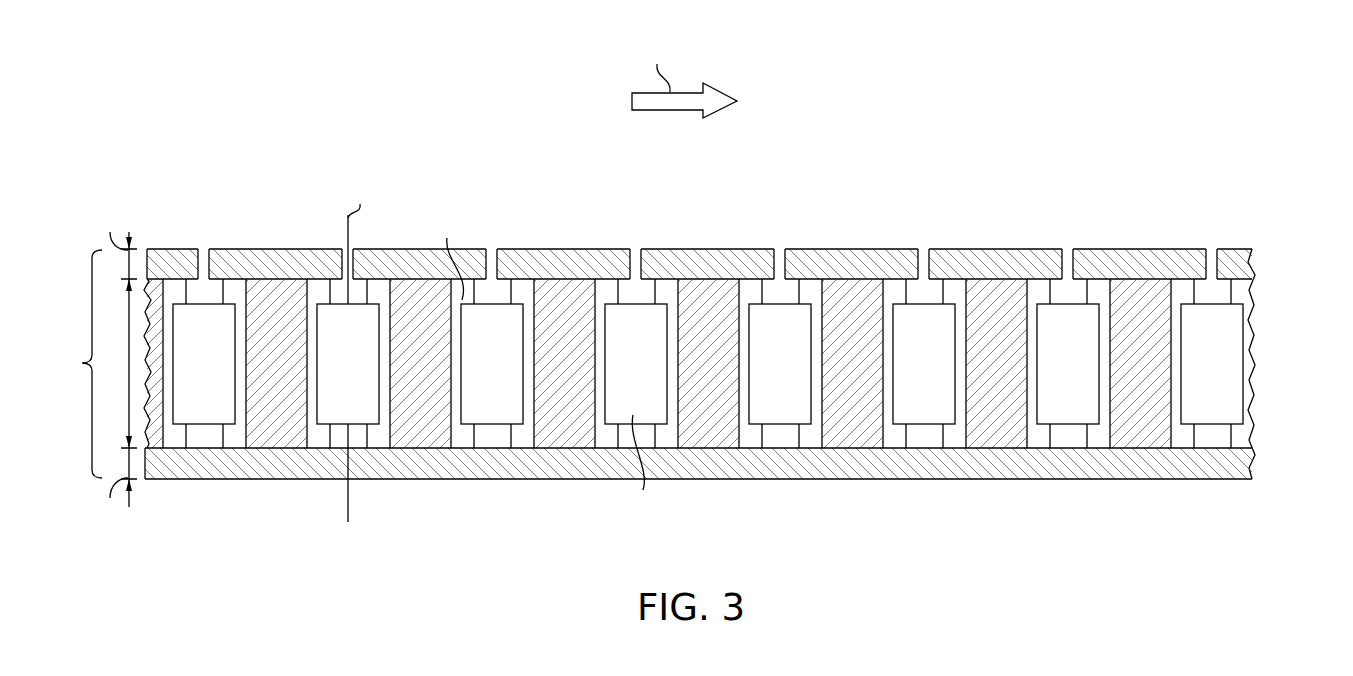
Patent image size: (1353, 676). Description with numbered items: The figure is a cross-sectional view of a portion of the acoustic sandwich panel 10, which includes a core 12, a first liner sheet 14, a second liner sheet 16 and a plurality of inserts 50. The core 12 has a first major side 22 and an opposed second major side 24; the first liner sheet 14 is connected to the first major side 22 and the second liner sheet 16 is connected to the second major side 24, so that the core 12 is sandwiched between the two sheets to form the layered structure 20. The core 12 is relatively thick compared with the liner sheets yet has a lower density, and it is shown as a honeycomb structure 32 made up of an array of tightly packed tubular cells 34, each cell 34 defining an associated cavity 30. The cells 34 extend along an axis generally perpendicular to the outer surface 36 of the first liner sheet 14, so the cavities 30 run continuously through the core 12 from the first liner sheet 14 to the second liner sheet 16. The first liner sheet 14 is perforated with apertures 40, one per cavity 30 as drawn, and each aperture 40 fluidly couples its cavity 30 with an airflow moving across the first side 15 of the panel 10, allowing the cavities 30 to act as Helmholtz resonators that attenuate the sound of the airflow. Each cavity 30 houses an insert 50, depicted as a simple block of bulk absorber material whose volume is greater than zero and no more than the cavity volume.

The acoustic sandwich panel 10 is at (741, 319).
The core 12 is at (724, 352).
The first liner sheet 14 is at (1253, 260).
The first side 15 is at (743, 219).
The second liner sheet 16 is at (727, 491).
The layered structure 20 is at (89, 364).
The first major side 22 is at (743, 247).
The second major side 24 is at (742, 475).
The cavity 30 is at (522, 287).
The honeycomb structure 32 is at (742, 519).
The cell 34 is at (955, 440).
The outer surface 36 is at (268, 250).
The aperture 40 is at (203, 272).
The insert 50 is at (928, 315).